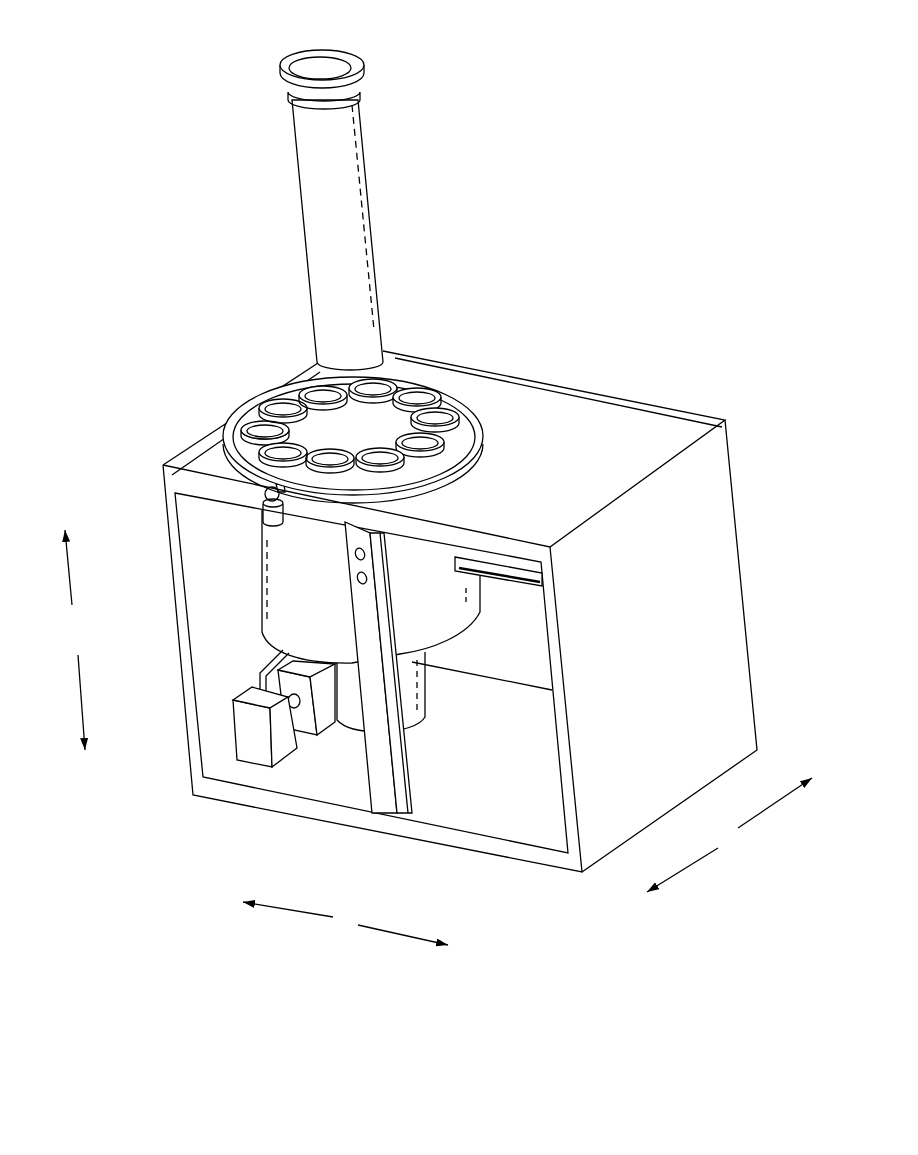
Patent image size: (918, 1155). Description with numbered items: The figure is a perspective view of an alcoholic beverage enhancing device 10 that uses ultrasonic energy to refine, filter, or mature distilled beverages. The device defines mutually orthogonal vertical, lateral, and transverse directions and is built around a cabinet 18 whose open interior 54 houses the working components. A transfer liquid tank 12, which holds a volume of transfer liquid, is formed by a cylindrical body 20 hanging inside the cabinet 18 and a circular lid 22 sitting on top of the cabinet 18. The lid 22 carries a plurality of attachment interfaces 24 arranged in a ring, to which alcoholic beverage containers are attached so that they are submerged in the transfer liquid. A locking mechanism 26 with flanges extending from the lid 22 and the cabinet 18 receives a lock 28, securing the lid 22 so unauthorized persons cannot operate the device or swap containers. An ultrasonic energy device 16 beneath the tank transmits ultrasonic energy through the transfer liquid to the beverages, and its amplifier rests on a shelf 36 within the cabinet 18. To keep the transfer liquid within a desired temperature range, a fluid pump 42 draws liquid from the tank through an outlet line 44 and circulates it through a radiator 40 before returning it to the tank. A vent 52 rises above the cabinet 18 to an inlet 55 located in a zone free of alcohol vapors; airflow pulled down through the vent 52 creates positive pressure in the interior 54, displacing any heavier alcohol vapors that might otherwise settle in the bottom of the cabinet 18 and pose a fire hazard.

The alcoholic beverage enhancing device 10 is at (687, 262).
The transfer liquid tank 12 is at (234, 533).
The ultrasonic energy device 16 is at (434, 683).
The cabinet 18 is at (703, 507).
The body 20 is at (270, 572).
The lid 22 is at (381, 423).
The attachment interfaces 24 is at (257, 421).
The locking mechanism 26 is at (280, 490).
The lock 28 is at (281, 537).
The shelf 36 is at (527, 579).
The radiator 40 is at (327, 722).
The fluid pump 42 is at (255, 746).
The outlet line 44 is at (253, 678).
The vent 52 is at (362, 276).
The interior 54 is at (497, 774).
The inlet 55 is at (328, 54).